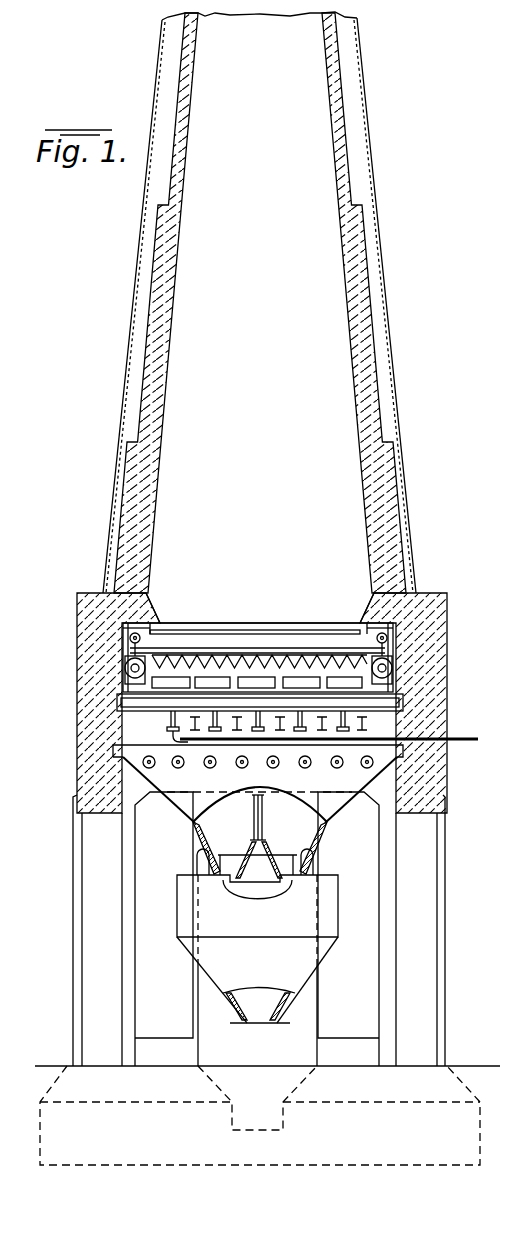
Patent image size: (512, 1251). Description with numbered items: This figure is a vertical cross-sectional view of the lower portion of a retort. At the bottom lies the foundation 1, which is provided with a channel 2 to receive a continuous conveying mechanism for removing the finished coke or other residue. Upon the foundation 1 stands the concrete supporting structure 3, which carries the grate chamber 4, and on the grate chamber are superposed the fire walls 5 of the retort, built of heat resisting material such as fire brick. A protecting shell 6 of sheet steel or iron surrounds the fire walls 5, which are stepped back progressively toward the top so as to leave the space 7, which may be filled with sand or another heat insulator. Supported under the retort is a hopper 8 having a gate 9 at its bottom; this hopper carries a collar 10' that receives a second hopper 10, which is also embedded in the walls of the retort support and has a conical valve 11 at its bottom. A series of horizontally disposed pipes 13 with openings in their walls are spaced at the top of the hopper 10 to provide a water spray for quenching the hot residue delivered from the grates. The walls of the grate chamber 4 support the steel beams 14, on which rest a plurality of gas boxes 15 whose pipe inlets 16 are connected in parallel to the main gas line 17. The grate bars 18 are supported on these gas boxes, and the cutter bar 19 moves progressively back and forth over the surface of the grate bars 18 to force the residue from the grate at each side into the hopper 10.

The foundation 1 is at (260, 1115).
The pit 2 is at (257, 1098).
The concrete supporting structure 3 is at (105, 880).
The grate chamber 4 is at (78, 757).
The fire walls 5 is at (140, 470).
The outer casing 6 is at (125, 382).
The space 7 is at (170, 73).
The hopper 8 is at (300, 975).
The gate 9 is at (268, 1023).
The second hopper 10 is at (260, 815).
The collar 10' is at (278, 856).
The conical valve 11 is at (243, 870).
The horizontally disposed pipes 13 is at (184, 764).
The steel beams 14 is at (403, 698).
The gas boxes 15 is at (170, 700).
The pipe inlets 16 is at (268, 735).
The main gas line 17 is at (465, 742).
The grate bars 18 is at (243, 653).
The cutter bar 19 is at (290, 622).